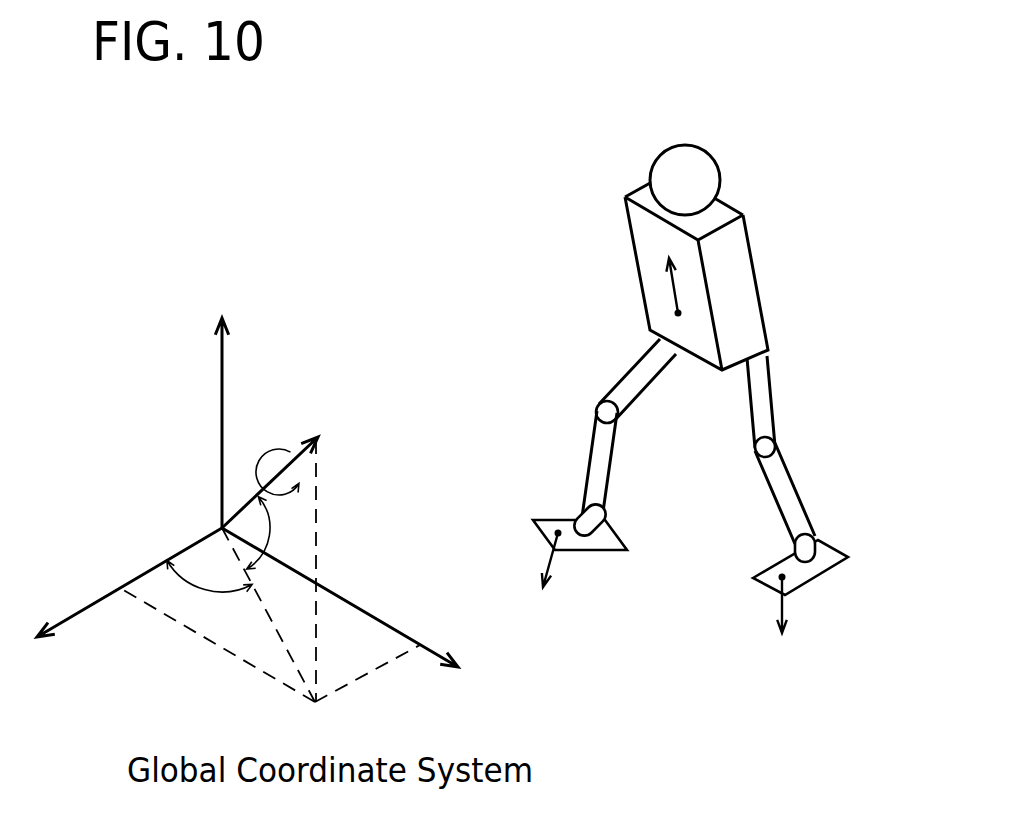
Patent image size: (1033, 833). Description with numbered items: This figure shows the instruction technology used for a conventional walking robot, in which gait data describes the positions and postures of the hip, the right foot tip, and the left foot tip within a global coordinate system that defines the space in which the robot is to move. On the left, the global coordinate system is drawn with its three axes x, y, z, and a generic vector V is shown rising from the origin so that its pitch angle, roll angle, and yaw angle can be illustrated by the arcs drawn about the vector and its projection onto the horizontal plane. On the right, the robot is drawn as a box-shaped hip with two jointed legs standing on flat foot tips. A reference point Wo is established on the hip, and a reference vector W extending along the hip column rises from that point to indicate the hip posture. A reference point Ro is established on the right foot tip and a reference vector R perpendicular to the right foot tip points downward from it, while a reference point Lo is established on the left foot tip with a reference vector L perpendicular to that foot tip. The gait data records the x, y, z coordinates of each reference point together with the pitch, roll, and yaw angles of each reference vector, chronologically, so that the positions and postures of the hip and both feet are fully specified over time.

The reference vector of the hip W is at (675, 288).
The reference point of the hip Wo is at (676, 314).
The reference vector of the right foot tip R is at (548, 556).
The reference point of the right foot tip Ro is at (554, 530).
The reference vector of the left foot tip L is at (786, 607).
The reference point of the left foot tip Lo is at (790, 575).
The vector V is at (270, 563).
The x coordinate axis x is at (118, 594).
The y coordinate axis y is at (347, 607).
The z coordinate axis z is at (222, 409).